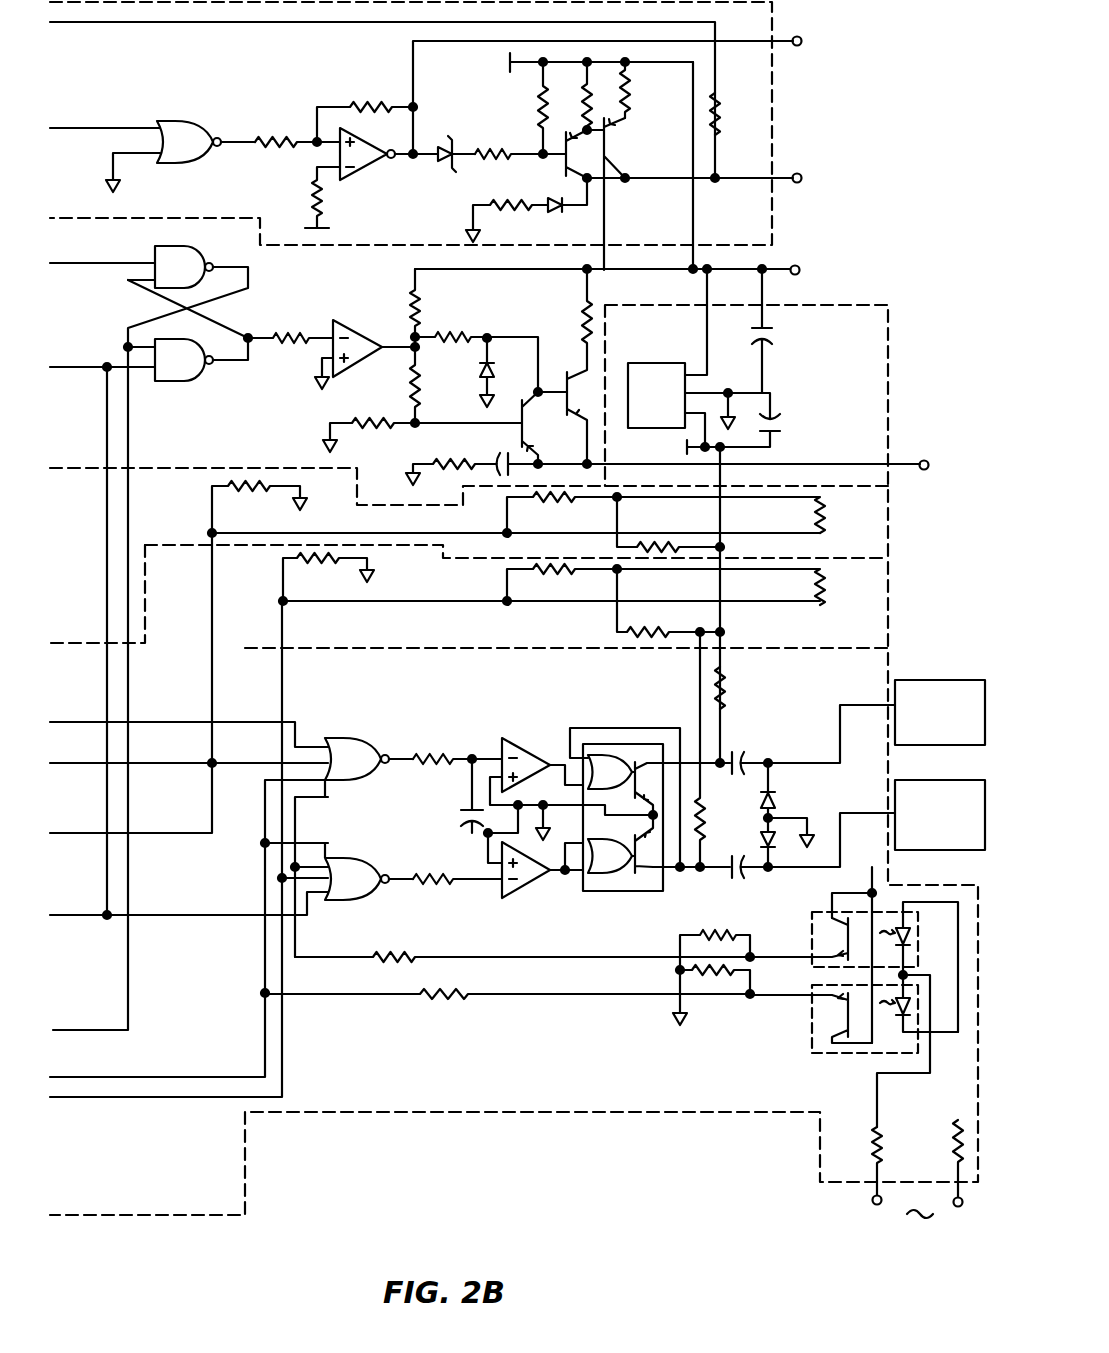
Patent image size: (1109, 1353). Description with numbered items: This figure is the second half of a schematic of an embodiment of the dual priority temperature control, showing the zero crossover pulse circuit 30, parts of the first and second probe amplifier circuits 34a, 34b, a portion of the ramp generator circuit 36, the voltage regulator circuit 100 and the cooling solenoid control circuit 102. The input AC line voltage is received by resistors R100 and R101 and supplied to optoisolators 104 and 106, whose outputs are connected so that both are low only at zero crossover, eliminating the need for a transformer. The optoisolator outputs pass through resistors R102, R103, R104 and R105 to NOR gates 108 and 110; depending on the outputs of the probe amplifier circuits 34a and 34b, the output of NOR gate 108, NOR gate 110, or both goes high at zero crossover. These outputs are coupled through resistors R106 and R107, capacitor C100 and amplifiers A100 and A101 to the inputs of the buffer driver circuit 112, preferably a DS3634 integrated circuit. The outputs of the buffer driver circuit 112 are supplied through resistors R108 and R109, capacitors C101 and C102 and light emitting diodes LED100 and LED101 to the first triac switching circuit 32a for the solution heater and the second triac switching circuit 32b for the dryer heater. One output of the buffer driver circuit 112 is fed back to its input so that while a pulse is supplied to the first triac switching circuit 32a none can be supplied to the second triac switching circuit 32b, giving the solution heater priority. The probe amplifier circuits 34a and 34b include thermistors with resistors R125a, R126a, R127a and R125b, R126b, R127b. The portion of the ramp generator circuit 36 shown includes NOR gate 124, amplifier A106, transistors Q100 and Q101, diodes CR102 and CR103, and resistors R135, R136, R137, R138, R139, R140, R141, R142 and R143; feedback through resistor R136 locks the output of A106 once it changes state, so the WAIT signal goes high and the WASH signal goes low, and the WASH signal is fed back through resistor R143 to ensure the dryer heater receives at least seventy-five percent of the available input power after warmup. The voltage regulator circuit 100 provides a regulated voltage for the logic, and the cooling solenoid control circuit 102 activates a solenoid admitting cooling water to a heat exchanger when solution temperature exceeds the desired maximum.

The ramp generator circuit 36 is at (206, 57).
The NOR gate 124 is at (193, 163).
The resistor R135 is at (295, 131).
The resistor R136 is at (373, 90).
The resistor R137 is at (313, 198).
The amplifier A106 is at (362, 168).
The diode CR102 is at (451, 141).
The diode CR103 is at (570, 208).
The resistor R138 is at (520, 143).
The resistor R139 is at (540, 108).
The resistor R140 is at (590, 80).
The resistor R141 is at (628, 108).
The resistor R142 is at (507, 211).
The resistor R143 is at (720, 130).
The transistor Q100 is at (580, 172).
The transistor Q101 is at (624, 150).
The cooling solenoid control circuit 102 is at (343, 284).
The voltage regulator circuit 100 is at (888, 378).
The second probe amplifier circuit 34b is at (188, 511).
The first probe amplifier circuit 34a is at (452, 630).
The resistor R127b is at (272, 450).
The resistor R125b is at (689, 512).
The resistor R126b is at (677, 545).
The resistor R127a is at (337, 560).
The resistor R125a is at (545, 577).
The resistor R126a is at (662, 643).
The resistor R108 is at (723, 692).
The resistor R109 is at (694, 798).
The zero crossover pulse circuit 30 is at (498, 1112).
The NOR gate 108 is at (356, 740).
The NOR gate 110 is at (352, 900).
The resistor R106 is at (432, 742).
The resistor R107 is at (448, 870).
The amplifier A100 is at (540, 740).
The amplifier A101 is at (530, 892).
The capacitor C100 is at (458, 808).
The capacitor C101 is at (742, 752).
The capacitor C102 is at (737, 880).
The buffer driver circuit 112 is at (633, 897).
The light emitting diode LED100 is at (773, 800).
The light emitting diode LED101 is at (777, 835).
The second triac switching circuit 32b is at (965, 678).
The first triac switching circuit 32a is at (963, 787).
The optoisolator 104 is at (812, 927).
The optoisolator 106 is at (812, 1040).
The resistor R102 is at (698, 932).
The resistor R103 is at (725, 975).
The resistor R104 is at (397, 962).
The resistor R105 is at (463, 997).
The resistor R100 is at (873, 1150).
The resistor R101 is at (953, 1150).